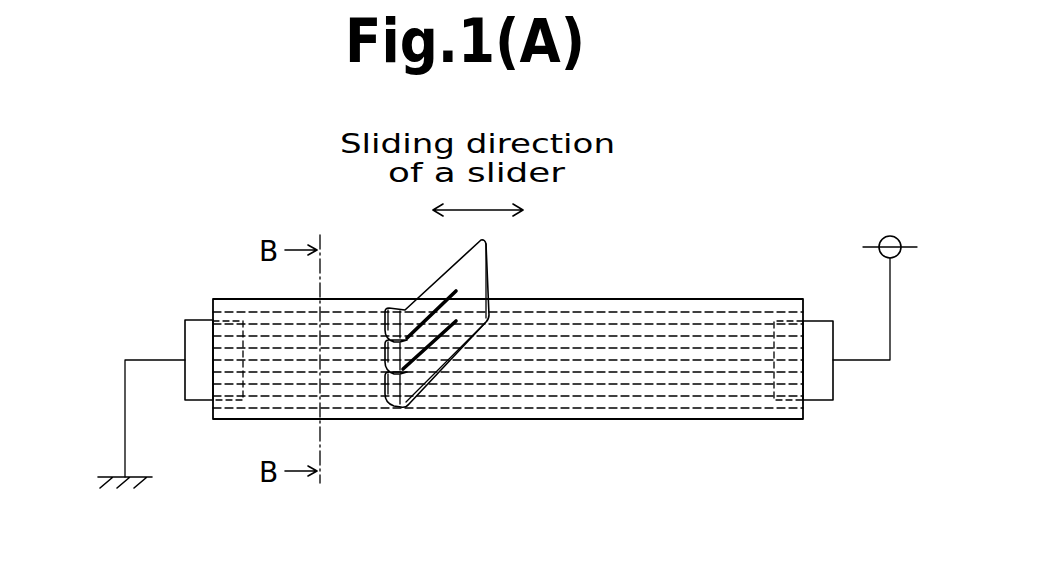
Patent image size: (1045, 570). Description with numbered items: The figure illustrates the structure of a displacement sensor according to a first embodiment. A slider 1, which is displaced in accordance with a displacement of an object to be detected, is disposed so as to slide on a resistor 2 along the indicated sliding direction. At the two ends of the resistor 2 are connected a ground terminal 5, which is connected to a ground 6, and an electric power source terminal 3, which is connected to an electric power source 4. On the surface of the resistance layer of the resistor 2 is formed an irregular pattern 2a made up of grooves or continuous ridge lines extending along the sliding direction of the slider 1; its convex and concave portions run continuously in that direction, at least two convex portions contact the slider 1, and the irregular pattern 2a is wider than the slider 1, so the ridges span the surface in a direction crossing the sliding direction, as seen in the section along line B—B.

The slider 1 is at (478, 258).
The resistor 2 is at (683, 299).
The irregular pattern 2a is at (509, 408).
The electric power source terminal 3 is at (828, 387).
The electric power source 4 is at (890, 235).
The ground terminal 5 is at (190, 333).
The ground 6 is at (106, 476).